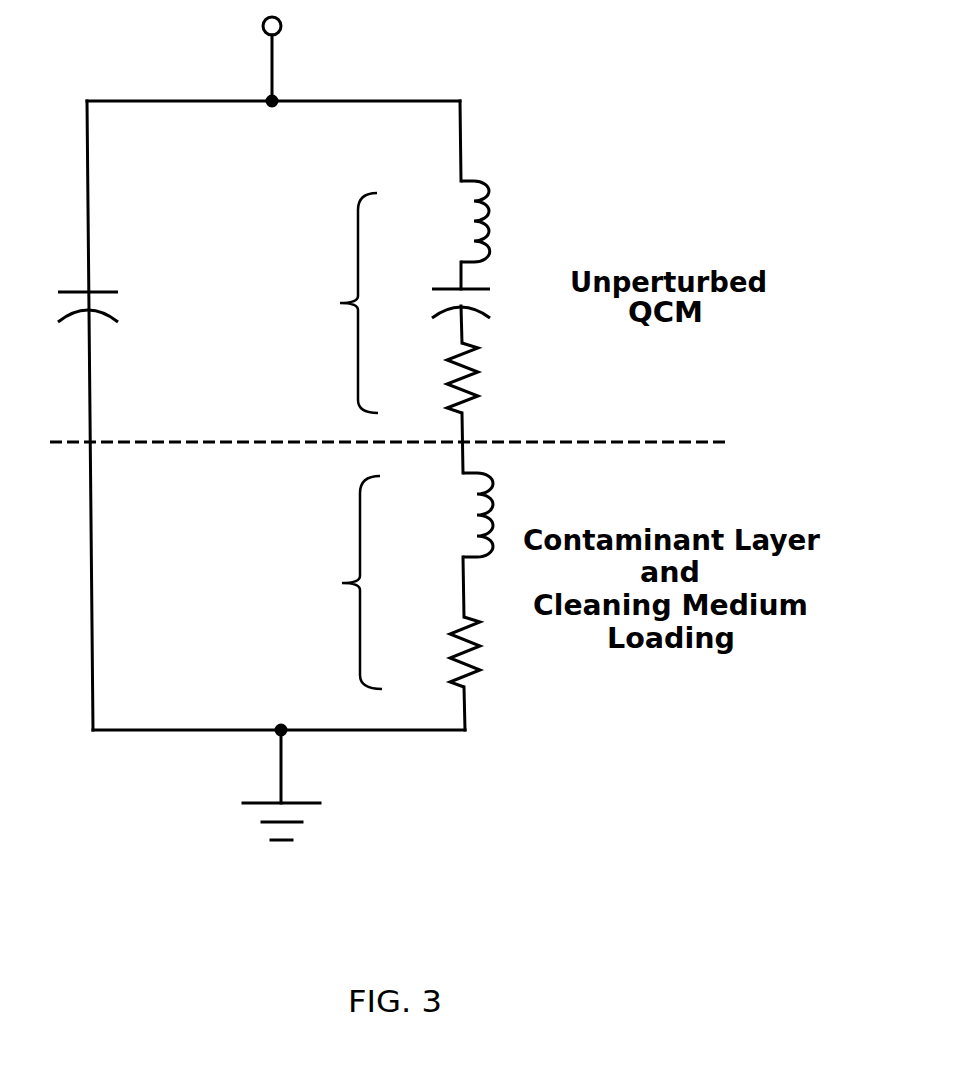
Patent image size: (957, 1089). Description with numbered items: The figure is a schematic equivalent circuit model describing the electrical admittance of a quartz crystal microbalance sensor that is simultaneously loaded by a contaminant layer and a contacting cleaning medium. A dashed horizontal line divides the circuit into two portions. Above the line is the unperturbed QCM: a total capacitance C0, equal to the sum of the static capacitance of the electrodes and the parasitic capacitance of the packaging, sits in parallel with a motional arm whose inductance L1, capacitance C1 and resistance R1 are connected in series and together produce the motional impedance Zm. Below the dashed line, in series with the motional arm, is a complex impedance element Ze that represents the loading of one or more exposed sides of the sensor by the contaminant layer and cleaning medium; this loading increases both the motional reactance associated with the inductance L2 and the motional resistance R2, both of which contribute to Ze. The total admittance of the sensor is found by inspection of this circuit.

The total capacitance C0 is at (123, 307).
The motional impedance Zm is at (390, 297).
The inductance L1 is at (431, 221).
The capacitance C1 is at (431, 305).
The resistance R1 is at (425, 378).
The impedance element Ze is at (395, 581).
The motional inductance L2 is at (434, 515).
The motional resistance R2 is at (427, 652).